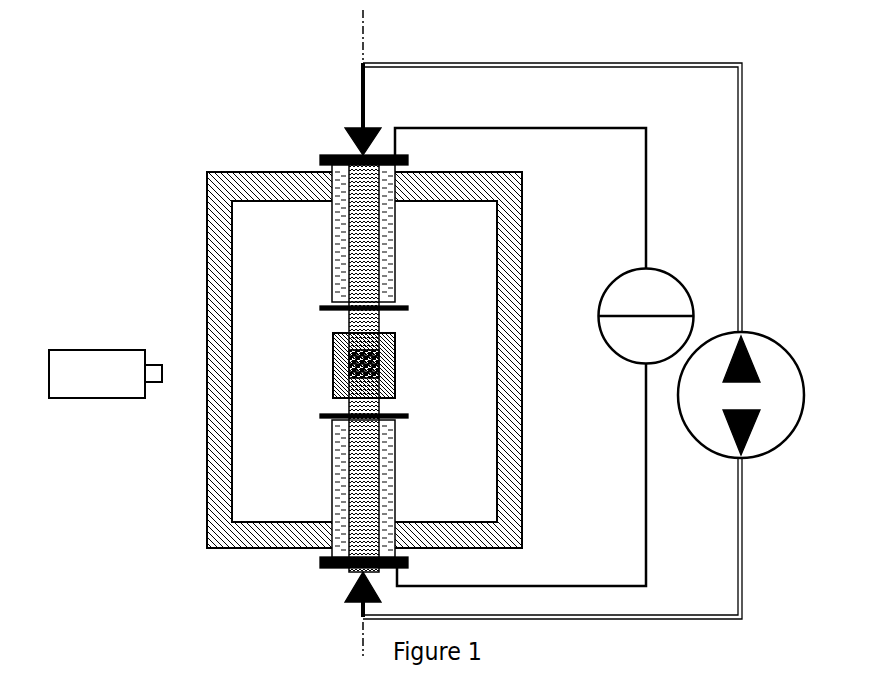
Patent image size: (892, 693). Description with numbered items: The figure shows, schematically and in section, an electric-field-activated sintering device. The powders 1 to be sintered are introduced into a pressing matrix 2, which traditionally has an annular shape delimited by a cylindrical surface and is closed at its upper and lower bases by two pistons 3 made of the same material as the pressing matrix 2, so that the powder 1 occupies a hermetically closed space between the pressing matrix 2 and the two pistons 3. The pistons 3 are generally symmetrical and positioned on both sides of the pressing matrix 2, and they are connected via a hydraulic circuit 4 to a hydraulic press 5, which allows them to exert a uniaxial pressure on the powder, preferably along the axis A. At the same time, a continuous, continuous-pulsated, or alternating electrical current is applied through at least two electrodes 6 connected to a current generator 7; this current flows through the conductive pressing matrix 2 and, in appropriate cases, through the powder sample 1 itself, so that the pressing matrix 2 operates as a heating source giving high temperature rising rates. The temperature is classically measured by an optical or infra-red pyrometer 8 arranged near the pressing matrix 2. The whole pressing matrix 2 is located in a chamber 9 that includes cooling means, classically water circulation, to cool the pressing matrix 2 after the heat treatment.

The powders 1 is at (333, 378).
The pressing matrix 2 is at (333, 342).
The pistons 3 is at (337, 233).
The hydraulic circuit 4 is at (745, 578).
The hydraulic press 5 is at (770, 373).
The electrodes 6 is at (340, 497).
The current generator 7 is at (655, 292).
The pyrometer 8 is at (100, 376).
The chamber 9 is at (215, 460).
The axis A is at (364, 43).